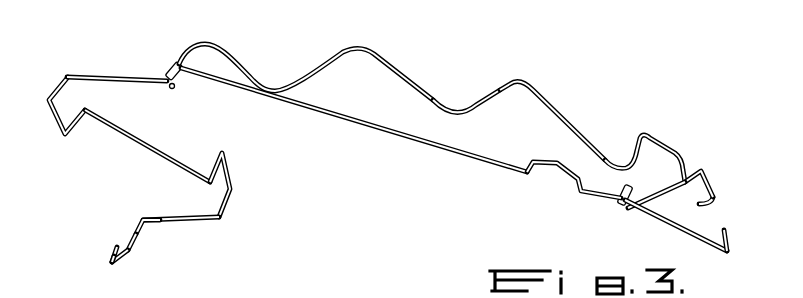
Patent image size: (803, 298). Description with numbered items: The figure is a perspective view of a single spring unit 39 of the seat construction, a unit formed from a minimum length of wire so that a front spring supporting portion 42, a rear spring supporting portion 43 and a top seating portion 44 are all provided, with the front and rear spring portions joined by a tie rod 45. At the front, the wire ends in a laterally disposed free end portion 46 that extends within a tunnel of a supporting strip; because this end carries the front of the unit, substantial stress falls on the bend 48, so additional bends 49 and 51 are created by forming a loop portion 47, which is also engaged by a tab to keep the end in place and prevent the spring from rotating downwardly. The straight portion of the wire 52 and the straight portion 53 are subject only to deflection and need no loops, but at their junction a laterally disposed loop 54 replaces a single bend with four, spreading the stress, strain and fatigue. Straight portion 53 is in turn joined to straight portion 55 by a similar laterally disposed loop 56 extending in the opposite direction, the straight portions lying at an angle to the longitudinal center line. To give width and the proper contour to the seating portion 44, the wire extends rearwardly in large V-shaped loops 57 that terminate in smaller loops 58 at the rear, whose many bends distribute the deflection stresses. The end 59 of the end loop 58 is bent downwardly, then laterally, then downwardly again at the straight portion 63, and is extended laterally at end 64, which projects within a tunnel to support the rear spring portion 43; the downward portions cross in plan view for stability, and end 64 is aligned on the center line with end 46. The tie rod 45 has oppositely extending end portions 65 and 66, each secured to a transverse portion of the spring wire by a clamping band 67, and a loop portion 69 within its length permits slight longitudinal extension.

The spring unit 39 is at (535, 76).
The front spring supporting portion 42 is at (146, 164).
The rear spring supporting portion 43 is at (673, 226).
The top seating portion 44 is at (432, 97).
The tie rod 45 is at (460, 160).
The free end portion 46 is at (109, 250).
The loop portion 47 is at (124, 259).
The bend 48 is at (110, 260).
The additional bend 49 is at (128, 243).
The additional bend 51 is at (141, 218).
The straight portion of the wire 52 is at (188, 222).
The straight portion 53 is at (140, 143).
The laterally disposed loop 54 is at (236, 171).
The straight portion 55 is at (112, 77).
The laterally disposed loop 56 is at (62, 134).
The large V-shaped loops 57 is at (382, 55).
The smaller loops 58 is at (661, 146).
The end of the end loop 59 is at (714, 184).
The downwardly directed straight portion 63 is at (680, 223).
The extending end 64 is at (729, 233).
The end portion of tie rod 65 is at (173, 89).
The end portion of tie rod 66 is at (620, 182).
The clamping band 67 is at (173, 61).
The loop portion 69 is at (556, 174).